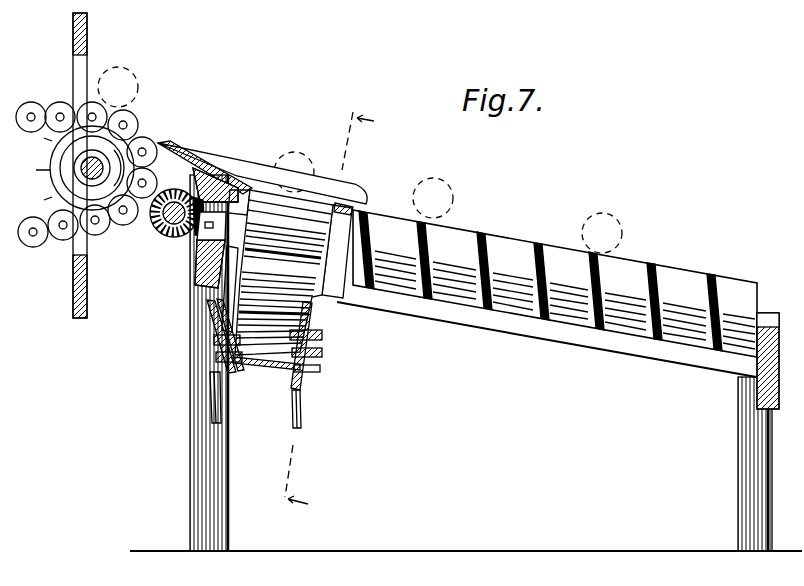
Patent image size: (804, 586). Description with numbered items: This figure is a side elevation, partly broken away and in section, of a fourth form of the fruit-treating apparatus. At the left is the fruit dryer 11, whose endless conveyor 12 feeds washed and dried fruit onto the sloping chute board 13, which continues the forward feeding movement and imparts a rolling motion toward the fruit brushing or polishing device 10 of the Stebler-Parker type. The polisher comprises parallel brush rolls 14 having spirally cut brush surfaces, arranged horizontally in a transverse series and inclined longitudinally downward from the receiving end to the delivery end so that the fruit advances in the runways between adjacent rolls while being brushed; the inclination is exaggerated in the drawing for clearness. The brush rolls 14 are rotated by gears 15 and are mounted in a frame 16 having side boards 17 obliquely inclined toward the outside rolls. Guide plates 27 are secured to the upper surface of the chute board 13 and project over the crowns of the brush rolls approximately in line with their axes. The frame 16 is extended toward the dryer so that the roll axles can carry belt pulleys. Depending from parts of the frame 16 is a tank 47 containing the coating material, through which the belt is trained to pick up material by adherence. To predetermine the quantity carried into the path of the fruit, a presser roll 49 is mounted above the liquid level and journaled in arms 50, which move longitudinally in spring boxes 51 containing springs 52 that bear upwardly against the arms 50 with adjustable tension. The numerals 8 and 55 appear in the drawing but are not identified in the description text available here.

The section line 8- 8 is at (321, 312).
The fruit brushing or polishing device 10 is at (540, 238).
The fruit dryer 11 is at (72, 74).
The endless conveyor 12 is at (132, 124).
The sloping chute board 13 is at (166, 147).
The brush rolls 14 is at (530, 325).
The gears 15 is at (192, 240).
The frame 16 is at (746, 434).
The side boards 17 is at (597, 348).
The guide plates 27 is at (229, 160).
The tank 47 is at (318, 337).
The presser roll 49 is at (255, 279).
The arms 50 is at (214, 285).
The spring boxes 51 is at (208, 371).
The springs 52 is at (213, 338).
The cross plate 55 is at (214, 362).